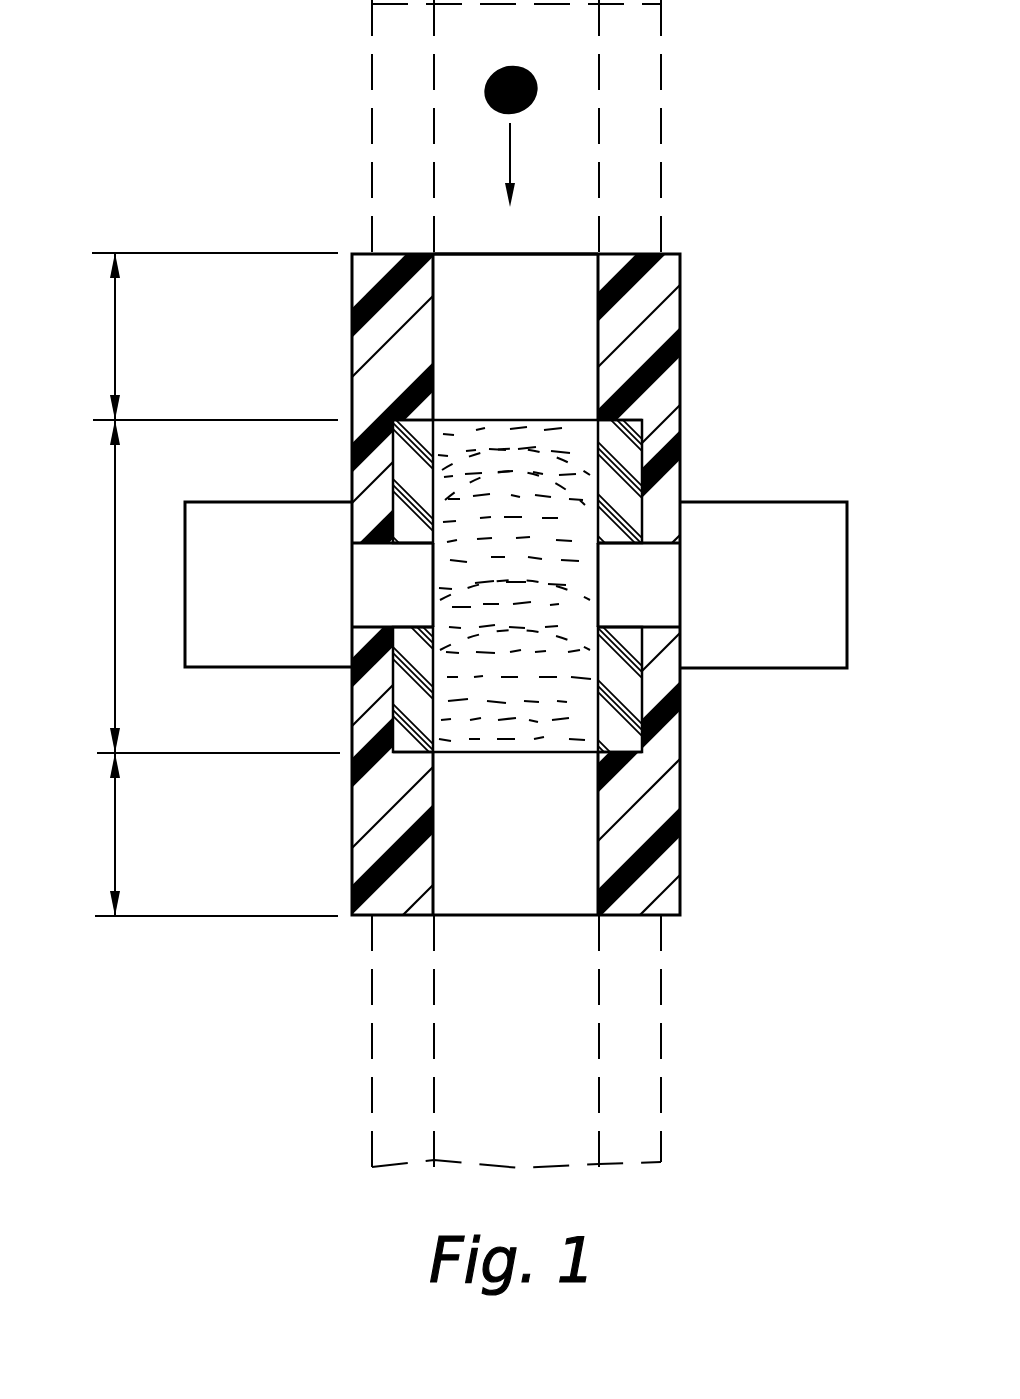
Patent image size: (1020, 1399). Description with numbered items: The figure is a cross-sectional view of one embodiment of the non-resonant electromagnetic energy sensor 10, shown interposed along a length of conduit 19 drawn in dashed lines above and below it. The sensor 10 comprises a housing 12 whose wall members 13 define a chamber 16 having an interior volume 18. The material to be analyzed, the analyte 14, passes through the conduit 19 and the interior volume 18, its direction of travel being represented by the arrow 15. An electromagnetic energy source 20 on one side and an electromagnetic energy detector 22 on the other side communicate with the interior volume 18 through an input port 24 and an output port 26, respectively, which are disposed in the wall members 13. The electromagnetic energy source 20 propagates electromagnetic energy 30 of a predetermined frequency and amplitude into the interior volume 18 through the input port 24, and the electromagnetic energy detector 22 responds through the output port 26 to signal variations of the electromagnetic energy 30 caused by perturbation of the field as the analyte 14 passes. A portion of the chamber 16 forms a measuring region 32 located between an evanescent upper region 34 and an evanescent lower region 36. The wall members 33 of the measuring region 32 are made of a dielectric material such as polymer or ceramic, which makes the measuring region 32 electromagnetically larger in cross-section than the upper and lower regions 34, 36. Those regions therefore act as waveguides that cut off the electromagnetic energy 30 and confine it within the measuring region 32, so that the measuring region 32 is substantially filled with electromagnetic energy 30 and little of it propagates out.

The non-resonant electromagnetic energy sensor 10 is at (832, 382).
The housing 12 is at (692, 777).
The wall members 13 is at (665, 856).
The analyte 14 is at (537, 84).
The arrow 15 is at (511, 165).
The chamber 16 is at (568, 258).
The interior volume 18 is at (527, 359).
The conduit 19 is at (640, 46).
The electromagnetic energy source 20 is at (279, 603).
The electromagnetic energy detector 22 is at (786, 600).
The input port 24 is at (366, 600).
The output port 26 is at (663, 596).
The electromagnetic energy 30 is at (533, 738).
The measuring region 32 is at (112, 612).
The wall members of the measuring region 33 is at (600, 428).
The evanescent upper region 34 is at (113, 337).
The evanescent lower region 36 is at (113, 845).